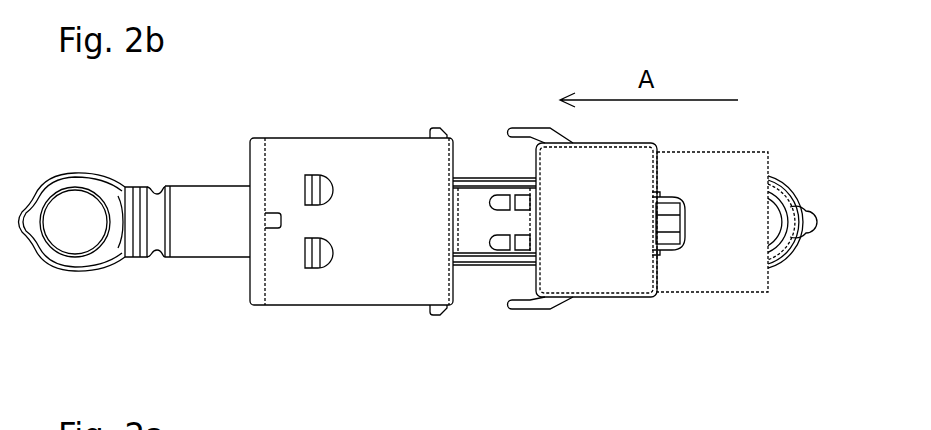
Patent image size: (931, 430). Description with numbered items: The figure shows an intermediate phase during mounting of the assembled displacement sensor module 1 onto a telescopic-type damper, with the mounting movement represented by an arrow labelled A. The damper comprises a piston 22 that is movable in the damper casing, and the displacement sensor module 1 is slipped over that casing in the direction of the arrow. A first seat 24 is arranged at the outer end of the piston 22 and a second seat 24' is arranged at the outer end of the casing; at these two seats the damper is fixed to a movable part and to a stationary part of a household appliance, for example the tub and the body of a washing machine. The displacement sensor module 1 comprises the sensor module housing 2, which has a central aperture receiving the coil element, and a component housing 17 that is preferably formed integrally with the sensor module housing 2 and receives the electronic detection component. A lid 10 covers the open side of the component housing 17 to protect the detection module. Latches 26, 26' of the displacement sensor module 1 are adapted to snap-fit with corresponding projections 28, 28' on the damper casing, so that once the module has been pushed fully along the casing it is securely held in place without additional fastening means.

The displacement sensor module 1 is at (742, 333).
The sensor module housing 2 is at (728, 150).
The lid 10 is at (603, 285).
The component housing 17 is at (648, 298).
The piston 22 is at (203, 208).
The first seat 24 is at (72, 263).
The second seat 24' is at (803, 270).
The latch 26 is at (537, 94).
The latch 26' is at (541, 343).
The projection 28 is at (417, 86).
The projection 28' is at (427, 349).